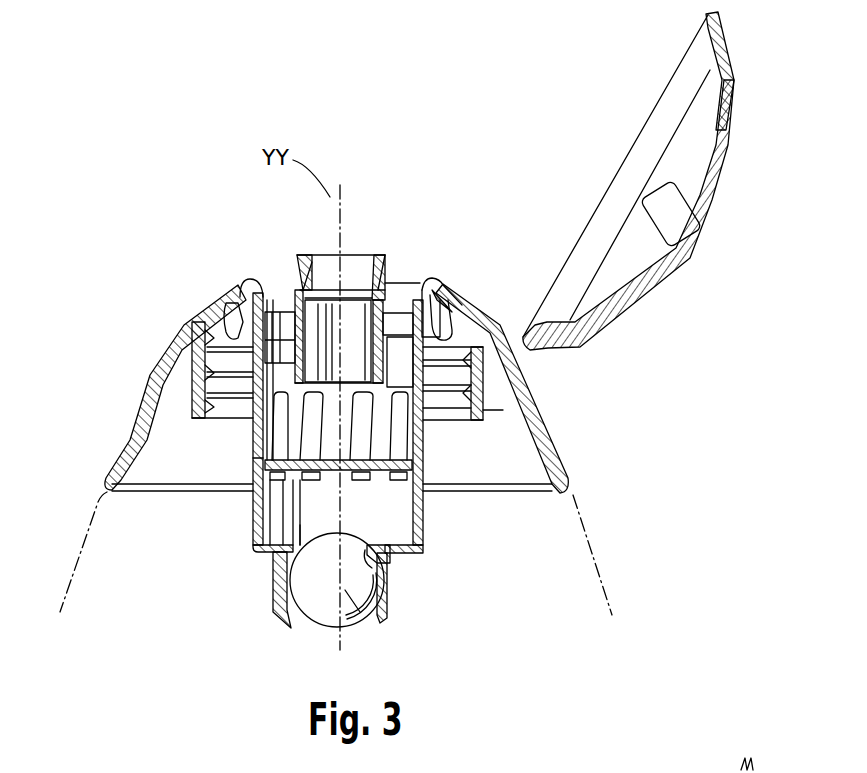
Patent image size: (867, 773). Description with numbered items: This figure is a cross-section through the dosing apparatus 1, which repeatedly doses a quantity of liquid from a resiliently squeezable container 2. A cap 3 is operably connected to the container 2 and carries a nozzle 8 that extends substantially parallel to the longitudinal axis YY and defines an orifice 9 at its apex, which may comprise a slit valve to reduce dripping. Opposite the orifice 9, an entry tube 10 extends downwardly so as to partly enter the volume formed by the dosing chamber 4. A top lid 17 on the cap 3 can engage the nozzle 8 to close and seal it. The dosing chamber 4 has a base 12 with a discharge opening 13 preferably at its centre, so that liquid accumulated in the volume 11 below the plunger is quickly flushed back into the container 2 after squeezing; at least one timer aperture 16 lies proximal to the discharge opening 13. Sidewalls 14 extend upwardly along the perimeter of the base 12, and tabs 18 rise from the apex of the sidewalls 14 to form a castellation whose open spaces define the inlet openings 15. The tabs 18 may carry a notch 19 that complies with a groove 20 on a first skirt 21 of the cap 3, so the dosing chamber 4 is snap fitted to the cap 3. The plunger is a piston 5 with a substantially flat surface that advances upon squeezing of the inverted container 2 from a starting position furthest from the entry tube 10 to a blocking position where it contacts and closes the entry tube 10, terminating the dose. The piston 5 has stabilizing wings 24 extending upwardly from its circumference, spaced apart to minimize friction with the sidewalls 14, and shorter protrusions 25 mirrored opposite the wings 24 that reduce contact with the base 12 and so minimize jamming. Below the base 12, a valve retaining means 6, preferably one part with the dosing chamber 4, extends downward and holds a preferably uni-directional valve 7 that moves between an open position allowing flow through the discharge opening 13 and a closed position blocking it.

The apparatus 1 is at (146, 210).
The container 2 is at (600, 566).
The cap 3 is at (562, 444).
The dosing chamber 4 is at (426, 530).
The piston 5 is at (288, 486).
The valve retaining means 6 is at (383, 608).
The valve 7 is at (348, 592).
The nozzle 8 is at (388, 268).
The orifice 9 is at (323, 262).
The entry tube 10 is at (295, 358).
The volume 11 is at (303, 526).
The base 12 is at (275, 555).
The discharge opening 13 is at (380, 570).
The sidewalls 14 is at (253, 458).
The inlet opening 15 is at (420, 344).
The timer aperture 16 is at (392, 560).
The top lid 17 is at (717, 62).
The tabs 18 is at (400, 344).
The notch 19 is at (243, 300).
The groove 20 is at (440, 314).
The first skirt 21 is at (424, 284).
The stabilizing wings 24 is at (283, 438).
The protrusions 25 is at (360, 480).